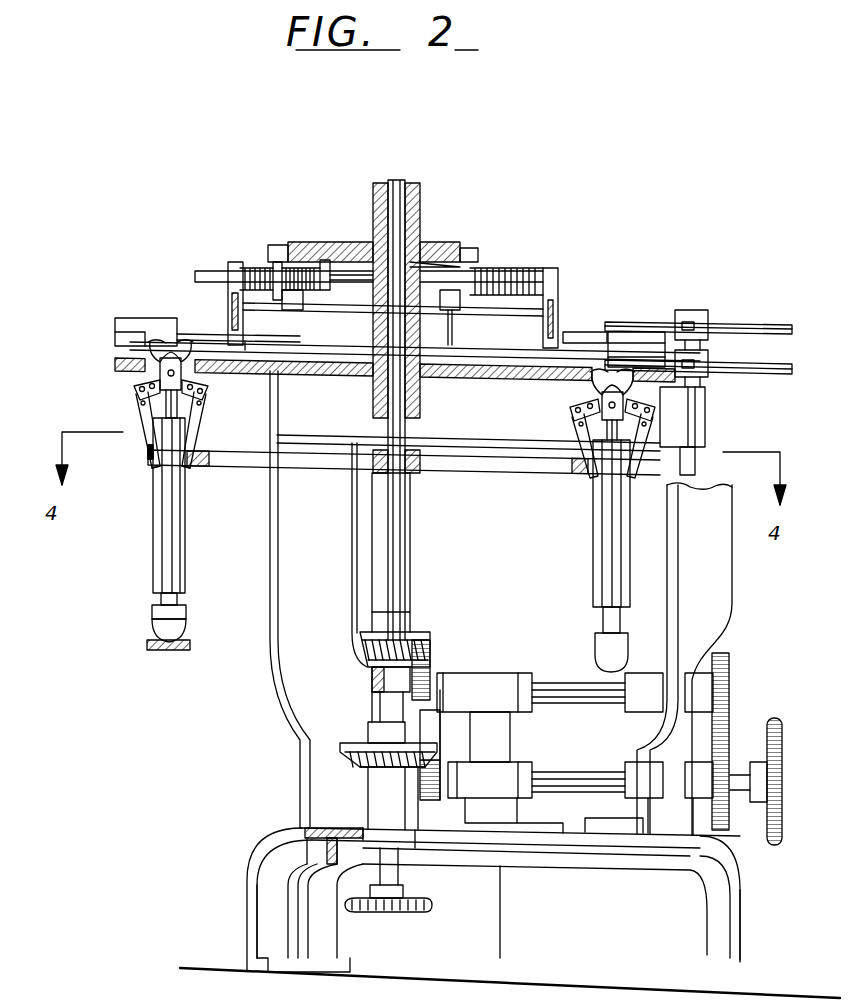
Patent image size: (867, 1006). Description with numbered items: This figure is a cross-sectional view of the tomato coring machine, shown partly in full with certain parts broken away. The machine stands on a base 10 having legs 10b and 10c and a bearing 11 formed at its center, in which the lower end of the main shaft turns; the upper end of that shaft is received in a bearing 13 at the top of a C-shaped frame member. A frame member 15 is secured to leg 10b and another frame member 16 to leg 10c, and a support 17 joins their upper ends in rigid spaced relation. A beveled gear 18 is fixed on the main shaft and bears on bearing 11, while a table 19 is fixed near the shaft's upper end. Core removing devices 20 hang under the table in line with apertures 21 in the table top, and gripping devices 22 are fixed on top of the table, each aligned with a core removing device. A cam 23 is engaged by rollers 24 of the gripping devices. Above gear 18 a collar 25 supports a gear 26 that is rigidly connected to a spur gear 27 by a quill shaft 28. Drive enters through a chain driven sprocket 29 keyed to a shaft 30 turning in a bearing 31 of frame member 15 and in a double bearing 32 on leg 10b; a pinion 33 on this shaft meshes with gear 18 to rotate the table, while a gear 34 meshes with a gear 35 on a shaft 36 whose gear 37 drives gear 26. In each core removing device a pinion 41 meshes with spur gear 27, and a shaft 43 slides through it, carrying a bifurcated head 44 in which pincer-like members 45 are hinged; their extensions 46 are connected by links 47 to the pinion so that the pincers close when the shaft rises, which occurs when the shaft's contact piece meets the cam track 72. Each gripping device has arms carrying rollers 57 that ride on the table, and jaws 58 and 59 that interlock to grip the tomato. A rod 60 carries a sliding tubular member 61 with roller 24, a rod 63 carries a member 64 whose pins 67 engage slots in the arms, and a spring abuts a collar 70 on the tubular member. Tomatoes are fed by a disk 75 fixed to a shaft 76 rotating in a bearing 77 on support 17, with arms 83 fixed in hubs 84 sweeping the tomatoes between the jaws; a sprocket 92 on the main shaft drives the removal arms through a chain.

The base 10 is at (234, 876).
The leg 10c is at (265, 905).
The leg 10b is at (712, 932).
The bearing 11 is at (398, 185).
The bearing 13 is at (423, 202).
The frame member 15 is at (728, 575).
The frame member 16 is at (296, 565).
The support 17 is at (540, 460).
The beveled gear 18 is at (345, 758).
The table 19 is at (115, 364).
The core removing device 20 is at (142, 590).
The aperture 21 is at (158, 358).
The gripping device 22 is at (240, 262).
The cam 23 is at (305, 242).
The roller 24 is at (278, 245).
The collar 25 is at (380, 680).
The gear 26 is at (300, 655).
The spur gear 27 is at (248, 468).
The quill shaft 28 is at (405, 562).
The chain driven sprocket 29 is at (773, 718).
The shaft 30 is at (585, 778).
The bearing 31 is at (668, 768).
The double bearing 32 is at (505, 735).
The pinion 33 is at (428, 800).
The gear 34 is at (727, 830).
The gear 35 is at (729, 658).
The shaft 36 is at (595, 688).
The gear 37 is at (430, 645).
The pinion 41 is at (150, 468).
The shaft 43 is at (170, 405).
The bifurcated head 44 is at (206, 390).
The pincer-like member 45 is at (178, 345).
The extension 46 is at (138, 387).
The link 47 is at (142, 414).
The roller 57 is at (555, 362).
The jaw 58 is at (588, 332).
The jaw 59 is at (592, 350).
The rod 60 is at (358, 272).
The tubular member 61 is at (195, 272).
The rod 63 is at (528, 315).
The member 64 is at (298, 308).
The pin 67 is at (462, 330).
The collar 70 is at (326, 260).
The cam track 72 is at (163, 651).
The disk 75 is at (745, 364).
The shaft 76 is at (698, 472).
The bearing 77 is at (700, 418).
The arm 83 is at (718, 324).
The hub 84 is at (685, 312).
The sprocket 92 is at (425, 910).